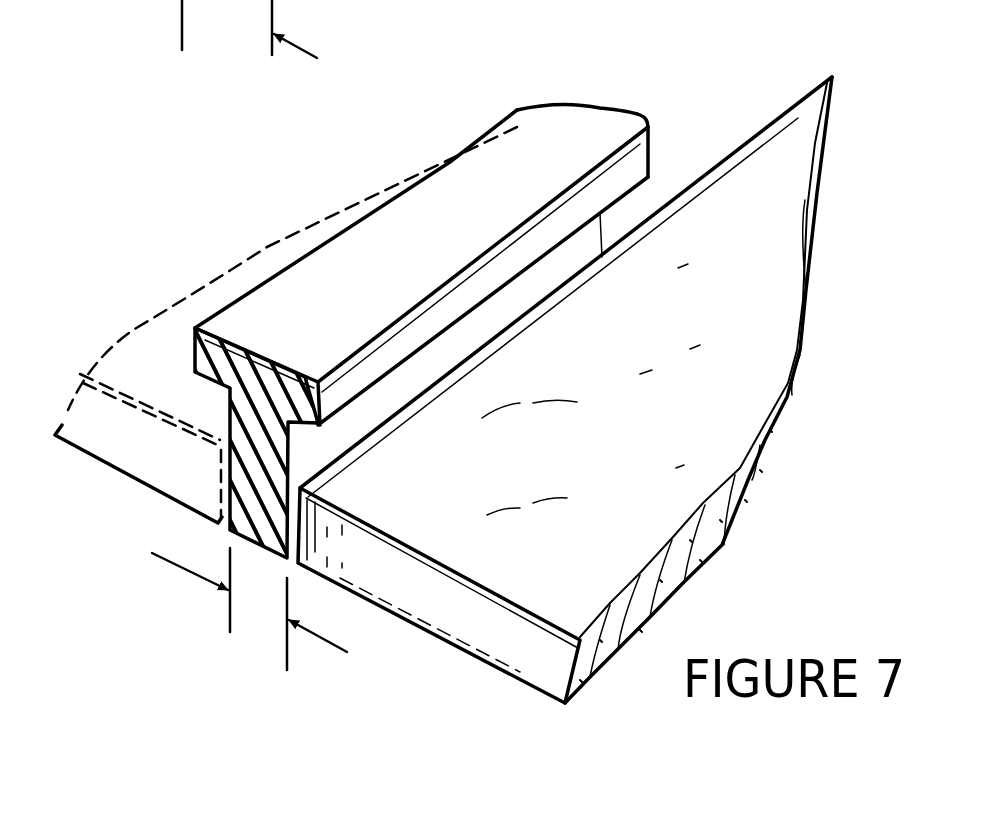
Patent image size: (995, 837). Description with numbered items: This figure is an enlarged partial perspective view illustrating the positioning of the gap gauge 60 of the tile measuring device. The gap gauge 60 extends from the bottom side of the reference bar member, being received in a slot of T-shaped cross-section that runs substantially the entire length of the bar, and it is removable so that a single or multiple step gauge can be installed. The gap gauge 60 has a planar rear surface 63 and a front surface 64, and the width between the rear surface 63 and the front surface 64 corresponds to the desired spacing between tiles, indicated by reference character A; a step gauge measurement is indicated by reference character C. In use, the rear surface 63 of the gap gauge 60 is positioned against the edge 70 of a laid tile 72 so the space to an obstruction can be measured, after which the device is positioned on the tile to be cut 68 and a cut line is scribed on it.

The gap gauge 60 is at (517, 177).
The rear surface 63 is at (585, 247).
The front surface 64 is at (230, 417).
The tile to be cut 68 is at (105, 438).
The edge 70 is at (740, 143).
The laid tile 72 is at (782, 202).
The width of gap gauge A is at (343, 650).
The step gauge measurement C is at (297, 47).